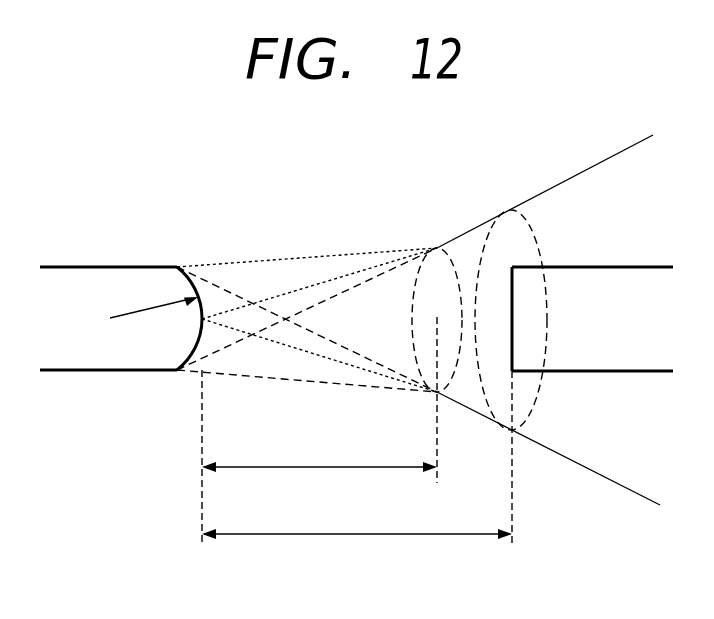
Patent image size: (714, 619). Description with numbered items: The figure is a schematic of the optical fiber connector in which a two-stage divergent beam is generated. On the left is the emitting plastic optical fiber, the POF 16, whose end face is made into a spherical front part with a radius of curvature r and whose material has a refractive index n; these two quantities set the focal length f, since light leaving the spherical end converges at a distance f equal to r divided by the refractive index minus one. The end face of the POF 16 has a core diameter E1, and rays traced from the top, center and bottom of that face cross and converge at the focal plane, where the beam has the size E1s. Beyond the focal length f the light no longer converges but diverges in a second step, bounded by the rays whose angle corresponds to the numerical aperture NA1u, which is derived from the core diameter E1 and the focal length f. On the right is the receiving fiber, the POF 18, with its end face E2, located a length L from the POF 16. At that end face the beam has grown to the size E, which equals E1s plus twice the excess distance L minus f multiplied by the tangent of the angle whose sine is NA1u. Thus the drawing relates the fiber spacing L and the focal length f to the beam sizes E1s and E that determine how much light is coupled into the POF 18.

The POF 16 is at (121, 271).
The POF 18 is at (592, 272).
The core diameter E1 is at (172, 303).
The core diameter E2 is at (556, 304).
The beam size at focal length E1s is at (430, 304).
The beam size E is at (511, 307).
The numerical aperture NA1u is at (548, 316).
The radius of curvature r is at (154, 299).
The refractive index n is at (154, 349).
The focal length f is at (319, 480).
The length L is at (357, 550).